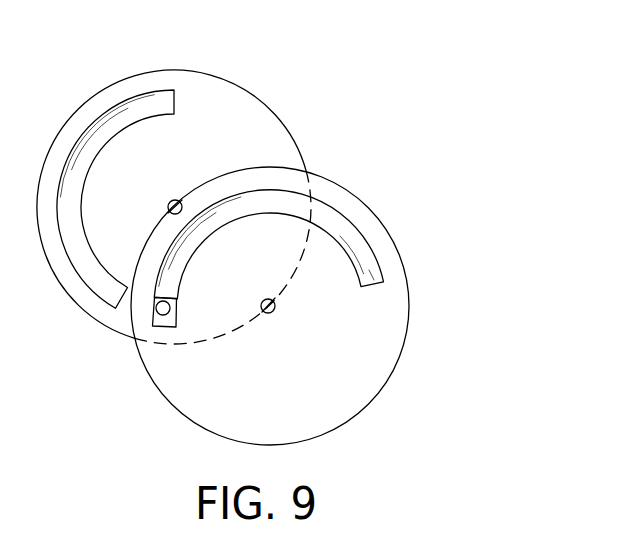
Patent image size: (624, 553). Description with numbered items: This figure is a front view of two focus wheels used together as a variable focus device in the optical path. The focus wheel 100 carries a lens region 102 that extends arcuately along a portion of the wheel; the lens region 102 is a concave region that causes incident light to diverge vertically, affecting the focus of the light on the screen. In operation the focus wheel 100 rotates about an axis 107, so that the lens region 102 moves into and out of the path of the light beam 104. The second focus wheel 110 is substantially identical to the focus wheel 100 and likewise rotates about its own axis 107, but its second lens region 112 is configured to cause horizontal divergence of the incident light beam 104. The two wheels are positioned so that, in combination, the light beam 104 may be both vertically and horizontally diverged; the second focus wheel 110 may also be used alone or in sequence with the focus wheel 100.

The focus wheel 100 is at (367, 167).
The lens region 102 is at (360, 248).
The incident light beam 104 is at (160, 312).
The axis 107 is at (178, 201).
The second focus wheel 110 is at (130, 62).
The second lens region 112 is at (103, 283).